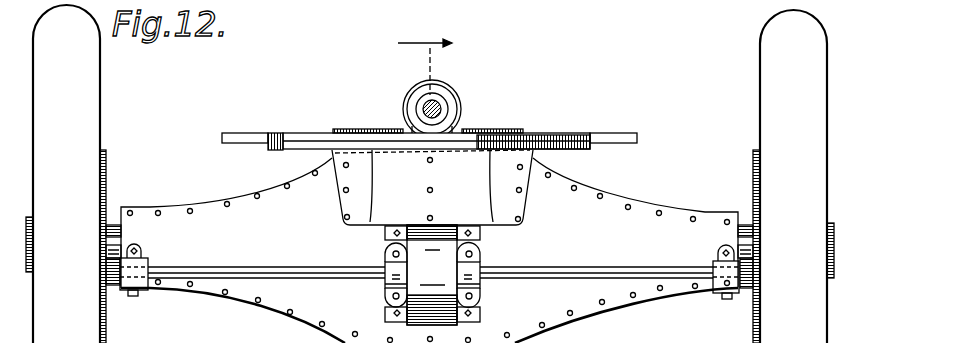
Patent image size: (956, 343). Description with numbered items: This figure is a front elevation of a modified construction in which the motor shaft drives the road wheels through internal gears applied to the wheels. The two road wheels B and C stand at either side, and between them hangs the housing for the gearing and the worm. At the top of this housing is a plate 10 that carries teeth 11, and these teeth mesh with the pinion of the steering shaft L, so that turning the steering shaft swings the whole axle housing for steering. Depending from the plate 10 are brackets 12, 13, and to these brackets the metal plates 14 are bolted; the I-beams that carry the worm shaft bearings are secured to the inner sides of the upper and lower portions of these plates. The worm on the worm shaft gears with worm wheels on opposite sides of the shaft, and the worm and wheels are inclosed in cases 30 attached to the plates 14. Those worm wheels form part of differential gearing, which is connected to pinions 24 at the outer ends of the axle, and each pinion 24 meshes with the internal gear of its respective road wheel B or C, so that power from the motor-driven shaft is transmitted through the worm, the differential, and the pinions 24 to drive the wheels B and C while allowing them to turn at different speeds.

The plate 10 is at (571, 140).
The teeth 11 is at (351, 131).
The depending bracket 12 is at (432, 187).
The depending bracket 13 is at (440, 35).
The metal plate 14 is at (429, 250).
The pinion 24 is at (108, 283).
The case 30 is at (432, 275).
The road wheel B is at (85, 112).
The road wheel C is at (772, 110).
The steering shaft L is at (424, 107).